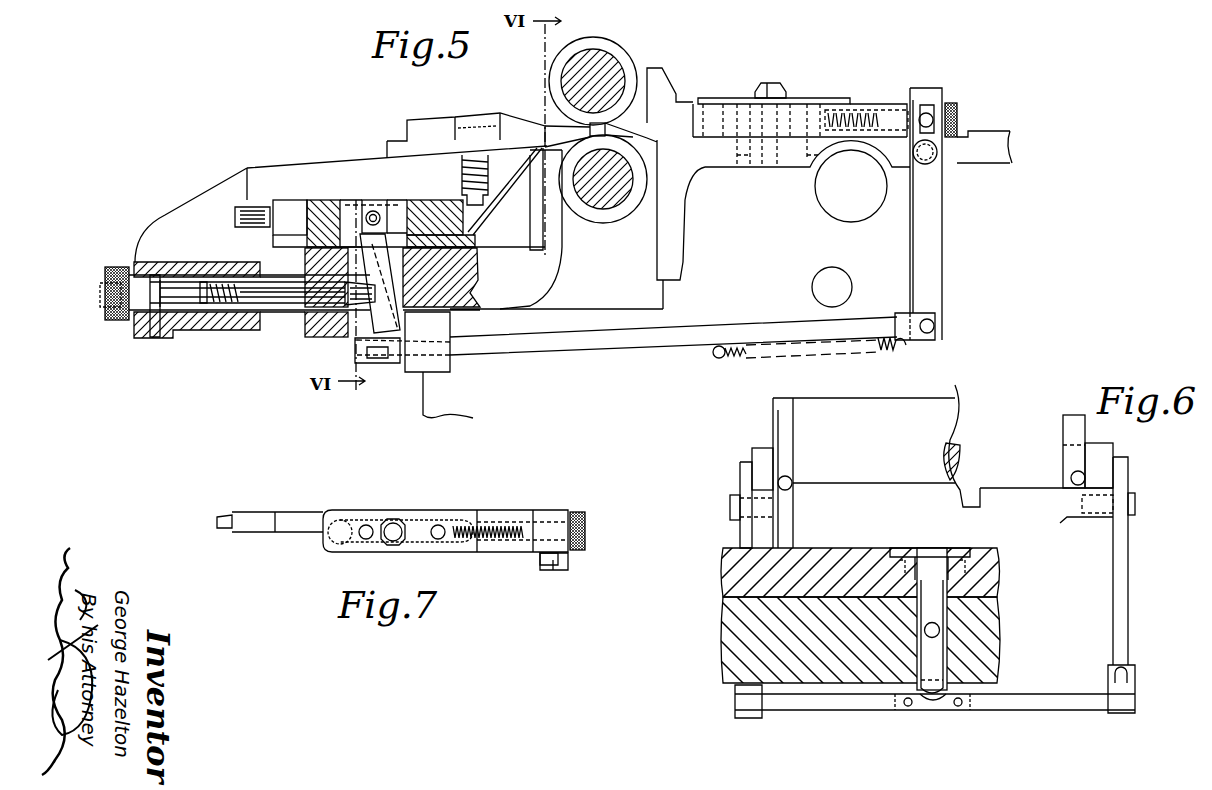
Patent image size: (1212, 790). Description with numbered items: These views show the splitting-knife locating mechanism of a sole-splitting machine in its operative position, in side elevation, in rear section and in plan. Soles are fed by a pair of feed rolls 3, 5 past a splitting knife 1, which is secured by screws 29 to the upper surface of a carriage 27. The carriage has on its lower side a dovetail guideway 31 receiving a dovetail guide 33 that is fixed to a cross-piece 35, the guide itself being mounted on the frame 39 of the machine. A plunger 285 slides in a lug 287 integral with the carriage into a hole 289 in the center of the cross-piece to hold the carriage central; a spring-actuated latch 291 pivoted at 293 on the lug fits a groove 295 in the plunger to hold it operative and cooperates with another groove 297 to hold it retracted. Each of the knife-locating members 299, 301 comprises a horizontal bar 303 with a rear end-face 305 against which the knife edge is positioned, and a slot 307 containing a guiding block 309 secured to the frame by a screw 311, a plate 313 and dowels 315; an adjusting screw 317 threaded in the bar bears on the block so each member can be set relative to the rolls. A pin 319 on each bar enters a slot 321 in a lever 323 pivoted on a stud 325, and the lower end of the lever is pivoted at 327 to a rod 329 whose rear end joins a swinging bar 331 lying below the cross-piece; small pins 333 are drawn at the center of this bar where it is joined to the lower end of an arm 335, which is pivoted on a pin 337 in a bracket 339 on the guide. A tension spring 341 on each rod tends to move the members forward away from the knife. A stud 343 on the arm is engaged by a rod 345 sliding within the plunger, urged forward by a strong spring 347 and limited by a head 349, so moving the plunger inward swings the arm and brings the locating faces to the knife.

In FIG. 5, the splitting knife 1 is at (425, 138).
In FIG. 5, the feed roll 3 is at (598, 62).
In FIG. 6, the feed roll 3 is at (947, 397).
In FIG. 5, the feed roll 5 is at (602, 194).
In FIG. 6, the feed roll 5 is at (948, 500).
In FIG. 5, the carriage 27 is at (350, 170).
In FIG. 5, the screws 29 is at (478, 124).
In FIG. 5, the dovetail guideway 31 is at (312, 206).
In FIG. 5, the dovetail guide 33 is at (447, 217).
In FIG. 6, the dovetail guide 33 is at (730, 580).
In FIG. 5, the cross-piece 35 is at (470, 306).
In FIG. 6, the cross-piece 35 is at (740, 648).
In FIG. 5, the frame 39 is at (667, 298).
In FIG. 5, the plunger 285 is at (178, 280).
In FIG. 5, the lug 287 is at (138, 240).
In FIG. 5, the hole 289 is at (305, 312).
In FIG. 5, the spring-actuated latch 291 is at (155, 330).
In FIG. 5, the pivot 293 is at (140, 322).
In FIG. 5, the groove 295 is at (158, 300).
In FIG. 5, the groove 297 is at (205, 283).
In FIG. 5, the knife-locating member 299 is at (663, 82).
In FIG. 6, the knife-locating member 299 is at (1065, 432).
In FIG. 6, the knife-locating member 301 is at (760, 458).
In FIG. 5, the horizontal bar 303 is at (790, 112).
In FIG. 7, the horizontal bar 303 is at (505, 510).
In FIG. 5, the rear end-face 305 is at (588, 128).
In FIG. 6, the rear end-face 305 is at (793, 478).
In FIG. 7, the rear end-face 305 is at (218, 522).
In FIG. 5, the slot 307 is at (713, 118).
In FIG. 7, the slot 307 is at (343, 520).
In FIG. 5, the guiding block 309 is at (858, 103).
In FIG. 7, the guiding block 309 is at (365, 522).
In FIG. 5, the screw 311 is at (778, 88).
In FIG. 7, the screw 311 is at (392, 545).
In FIG. 5, the plate 313 is at (790, 110).
In FIG. 7, the plate 313 is at (335, 522).
In FIG. 5, the dowels 315 is at (742, 110).
In FIG. 7, the dowels 315 is at (362, 540).
In FIG. 5, the adjusting screw 317 is at (958, 105).
In FIG. 7, the adjusting screw 317 is at (580, 512).
In FIG. 5, the pin 319 is at (938, 110).
In FIG. 6, the pin 319 is at (746, 470).
In FIG. 7, the pin 319 is at (545, 560).
In FIG. 5, the slot 321 is at (927, 112).
In FIG. 5, the lever 323 is at (935, 250).
In FIG. 6, the lever 323 is at (745, 530).
In FIG. 7, the lever 323 is at (570, 562).
In FIG. 5, the stud 325 is at (932, 162).
In FIG. 6, the stud 325 is at (733, 505).
In FIG. 7, the stud 325 is at (553, 571).
In FIG. 5, the pivotal connection 327 is at (935, 322).
In FIG. 5, the rod 329 is at (580, 340).
In FIG. 6, the rod 329 is at (738, 695).
In FIG. 5, the swinging bar 331 is at (367, 363).
In FIG. 6, the swinging bar 331 is at (1033, 694).
In FIG. 6, the pins 333 is at (915, 708).
In FIG. 5, the arm 335 is at (385, 270).
In FIG. 6, the arm 335 is at (937, 608).
In FIG. 5, the pin 337 is at (373, 210).
In FIG. 6, the pin 337 is at (918, 548).
In FIG. 5, the bracket 339 is at (390, 203).
In FIG. 6, the bracket 339 is at (938, 548).
In FIG. 5, the tension spring 341 is at (732, 360).
In FIG. 5, the stud 343 is at (355, 338).
In FIG. 6, the stud 343 is at (940, 630).
In FIG. 5, the rod 345 is at (282, 290).
In FIG. 5, the spring 347 is at (240, 282).
In FIG. 5, the head 349 is at (100, 295).